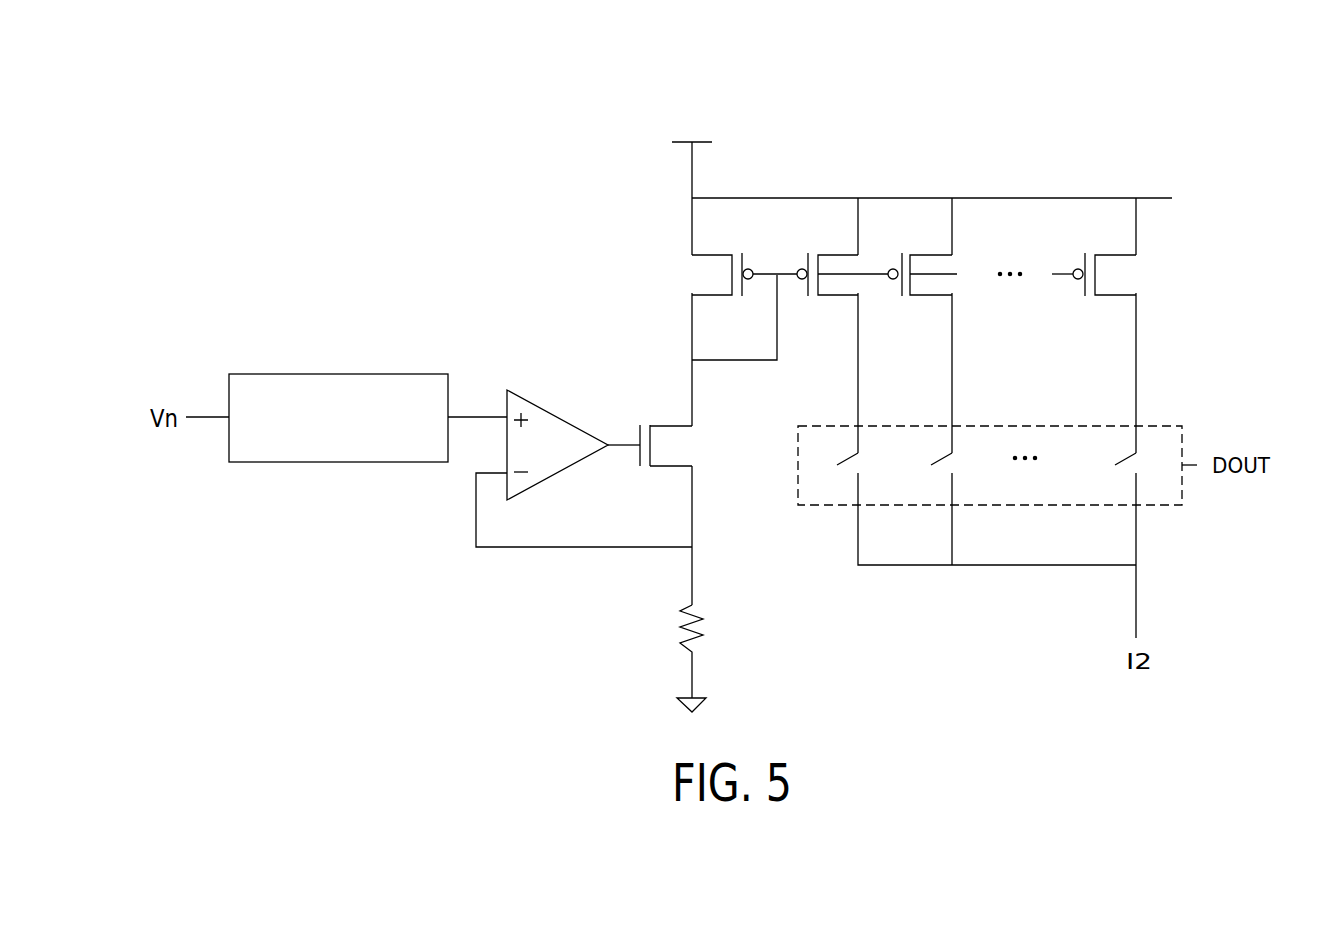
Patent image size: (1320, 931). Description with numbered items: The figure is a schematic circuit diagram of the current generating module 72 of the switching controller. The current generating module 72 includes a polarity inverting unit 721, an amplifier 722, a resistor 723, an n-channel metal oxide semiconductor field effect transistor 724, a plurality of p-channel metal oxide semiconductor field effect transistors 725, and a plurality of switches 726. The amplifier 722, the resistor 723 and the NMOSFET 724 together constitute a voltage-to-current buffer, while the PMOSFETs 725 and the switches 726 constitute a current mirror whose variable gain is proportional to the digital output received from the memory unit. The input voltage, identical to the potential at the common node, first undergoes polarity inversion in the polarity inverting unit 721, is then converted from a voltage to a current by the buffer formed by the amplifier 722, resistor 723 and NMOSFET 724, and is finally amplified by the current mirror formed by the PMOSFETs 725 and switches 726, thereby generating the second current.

The current generating module 72 is at (886, 150).
The polarity inverting unit 721 is at (322, 374).
The amplifier 722 is at (550, 408).
The resistor 723 is at (699, 627).
The n-channel metal oxide semiconductor field effect transistor 724 is at (672, 425).
The p-channel metal oxide semiconductor field effect transistors 725 is at (712, 255).
The switches 726 is at (851, 456).